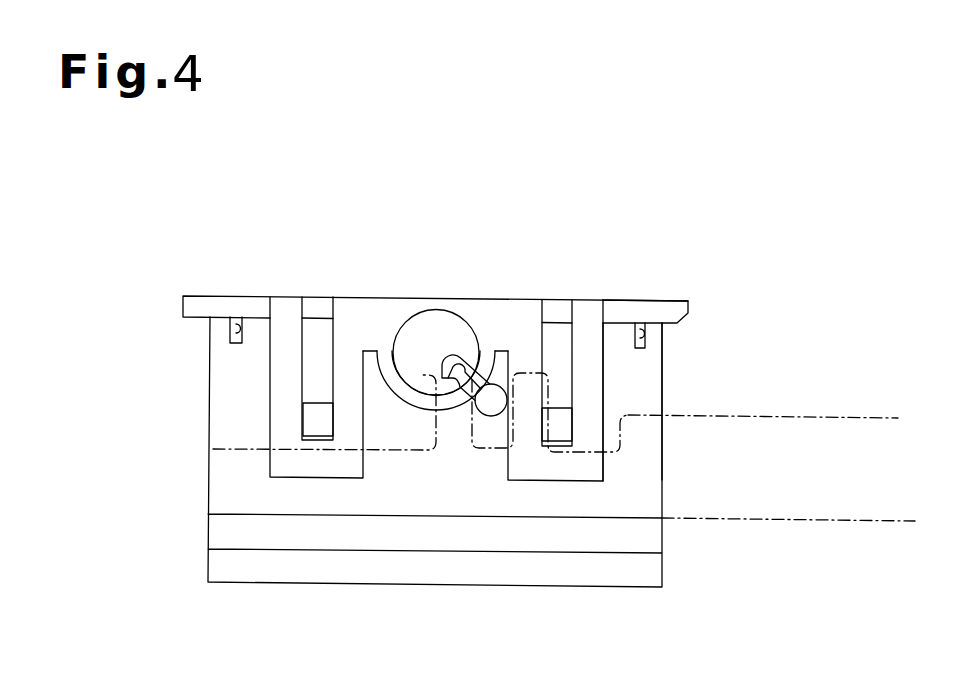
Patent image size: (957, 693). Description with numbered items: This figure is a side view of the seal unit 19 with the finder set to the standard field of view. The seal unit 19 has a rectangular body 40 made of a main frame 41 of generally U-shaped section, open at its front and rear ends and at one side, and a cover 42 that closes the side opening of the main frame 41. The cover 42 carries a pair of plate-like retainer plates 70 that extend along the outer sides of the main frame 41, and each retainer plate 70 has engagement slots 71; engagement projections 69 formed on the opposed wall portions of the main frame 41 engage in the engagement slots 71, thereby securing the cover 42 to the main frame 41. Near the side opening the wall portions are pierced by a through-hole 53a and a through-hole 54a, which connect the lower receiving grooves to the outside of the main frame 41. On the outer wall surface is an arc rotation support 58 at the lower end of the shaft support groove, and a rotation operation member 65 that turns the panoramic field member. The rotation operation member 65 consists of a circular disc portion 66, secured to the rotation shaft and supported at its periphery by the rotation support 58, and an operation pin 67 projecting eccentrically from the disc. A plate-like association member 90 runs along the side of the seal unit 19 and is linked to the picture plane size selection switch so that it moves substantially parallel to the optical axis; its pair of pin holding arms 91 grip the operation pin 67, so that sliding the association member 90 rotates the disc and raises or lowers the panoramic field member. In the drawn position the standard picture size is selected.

The seal unit 19 is at (255, 272).
The rectangular body 40 is at (673, 222).
The main frame 41 is at (619, 350).
The cover 42 is at (619, 311).
The through-hole 53a is at (645, 342).
The through-hole 54a is at (232, 333).
The arc rotation support 58 is at (395, 380).
The rotation operation member 65 is at (545, 210).
The circular disc portion 66 is at (445, 325).
The operation pin 67 is at (490, 397).
The engagement projection 69 is at (313, 420).
The retainer plate 70 is at (361, 320).
The engagement slot 71 is at (305, 383).
The association member 90 is at (780, 455).
The pin holding arm 91 is at (522, 418).